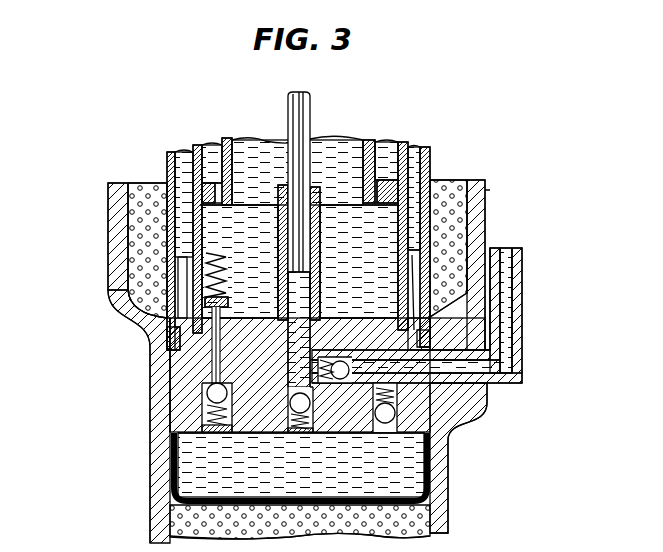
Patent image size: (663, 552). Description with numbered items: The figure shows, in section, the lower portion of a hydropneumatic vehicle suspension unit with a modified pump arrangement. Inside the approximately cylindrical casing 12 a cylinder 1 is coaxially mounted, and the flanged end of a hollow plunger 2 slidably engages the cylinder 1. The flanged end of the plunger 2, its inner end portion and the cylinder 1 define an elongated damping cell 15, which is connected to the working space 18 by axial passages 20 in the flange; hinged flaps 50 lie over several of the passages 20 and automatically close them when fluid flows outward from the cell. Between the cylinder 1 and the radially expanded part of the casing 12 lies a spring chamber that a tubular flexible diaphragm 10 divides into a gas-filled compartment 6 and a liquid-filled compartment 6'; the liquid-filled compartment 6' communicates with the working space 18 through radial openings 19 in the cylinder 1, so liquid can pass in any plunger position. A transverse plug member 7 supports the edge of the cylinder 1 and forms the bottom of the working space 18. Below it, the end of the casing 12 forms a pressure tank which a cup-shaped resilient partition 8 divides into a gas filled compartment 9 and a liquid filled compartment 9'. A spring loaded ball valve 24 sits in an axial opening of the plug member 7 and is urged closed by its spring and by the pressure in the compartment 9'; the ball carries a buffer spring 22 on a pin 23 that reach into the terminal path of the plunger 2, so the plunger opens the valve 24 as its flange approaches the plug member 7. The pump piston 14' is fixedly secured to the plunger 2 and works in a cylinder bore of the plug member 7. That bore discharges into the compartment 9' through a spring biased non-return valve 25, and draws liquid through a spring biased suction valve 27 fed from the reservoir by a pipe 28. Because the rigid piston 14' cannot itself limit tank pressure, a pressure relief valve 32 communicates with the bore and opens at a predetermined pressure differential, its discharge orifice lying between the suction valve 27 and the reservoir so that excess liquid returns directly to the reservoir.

The cylinder 1 is at (420, 162).
The hollow plunger 2 is at (226, 140).
The gas-filled compartment 6 is at (121, 250).
The liquid-filled compartment 6' is at (459, 248).
The plug member 7 is at (160, 363).
The resilient partition 8 is at (432, 462).
The gas filled compartment 9 is at (274, 522).
The liquid filled compartment 9' is at (272, 467).
The flexible diaphragm 10 is at (172, 160).
The casing 12 is at (487, 190).
The piston 14' is at (320, 239).
The damping cell 15 is at (393, 147).
The working space 18 is at (253, 150).
The radial openings 19 is at (394, 265).
The axial passages 20 is at (232, 197).
The buffer spring 22 is at (228, 268).
The pin 23 is at (220, 343).
The spring loaded ball valve 24 is at (210, 386).
The non-return valve 25 is at (288, 400).
The suction valve 27 is at (330, 392).
The pipe 28 is at (505, 270).
The pressure relief valve 32 is at (378, 420).
The hinged flaps 50 is at (388, 180).